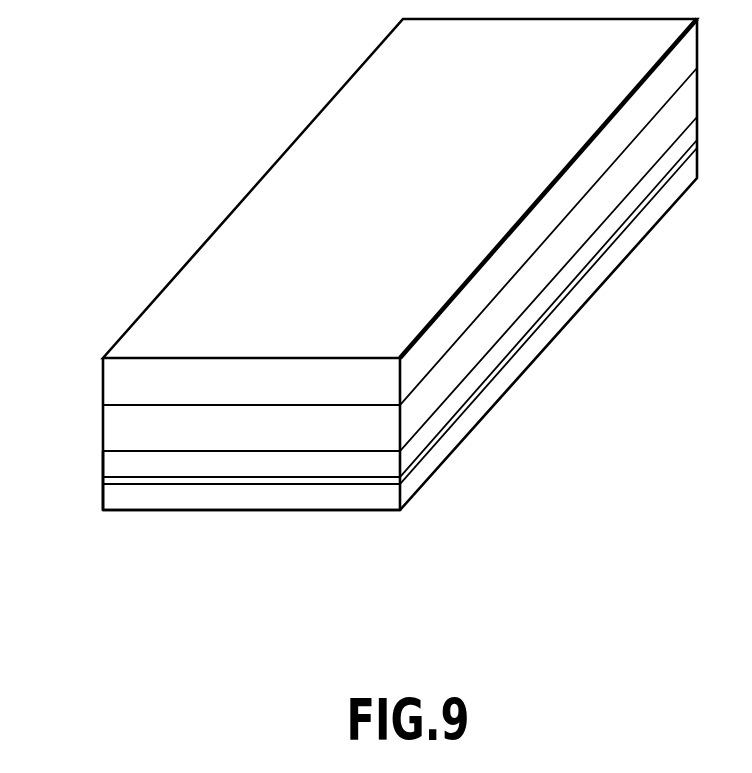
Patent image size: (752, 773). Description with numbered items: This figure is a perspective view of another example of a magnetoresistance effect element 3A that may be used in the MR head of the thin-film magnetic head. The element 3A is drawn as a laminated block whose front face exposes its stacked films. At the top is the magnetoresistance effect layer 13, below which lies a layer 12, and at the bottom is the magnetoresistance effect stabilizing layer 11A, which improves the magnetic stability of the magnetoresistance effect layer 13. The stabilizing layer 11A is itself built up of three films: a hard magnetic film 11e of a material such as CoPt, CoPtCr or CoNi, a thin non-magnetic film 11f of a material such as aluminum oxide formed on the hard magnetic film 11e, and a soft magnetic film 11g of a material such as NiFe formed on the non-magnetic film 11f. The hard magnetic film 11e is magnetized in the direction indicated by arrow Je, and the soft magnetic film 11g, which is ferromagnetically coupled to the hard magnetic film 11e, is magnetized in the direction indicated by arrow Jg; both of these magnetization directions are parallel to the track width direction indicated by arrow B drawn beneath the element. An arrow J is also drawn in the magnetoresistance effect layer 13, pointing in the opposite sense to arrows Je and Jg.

The magnetoresistance effect element 3A is at (208, 174).
The magnetoresistance effect layer 13 is at (97, 359).
The intermediate layer 12 is at (97, 406).
The magnetoresistance effect stabilizing layer 11A is at (97, 452).
The hard magnetic film 11e is at (283, 502).
The non-magnetic film 11f is at (377, 480).
The soft magnetic film 11g is at (387, 463).
The sense current direction J is at (197, 386).
The direction of magnetization of the soft magnetic film Jg is at (202, 464).
The direction of magnetization of the hard magnetic film Je is at (202, 497).
The track width direction B is at (116, 593).